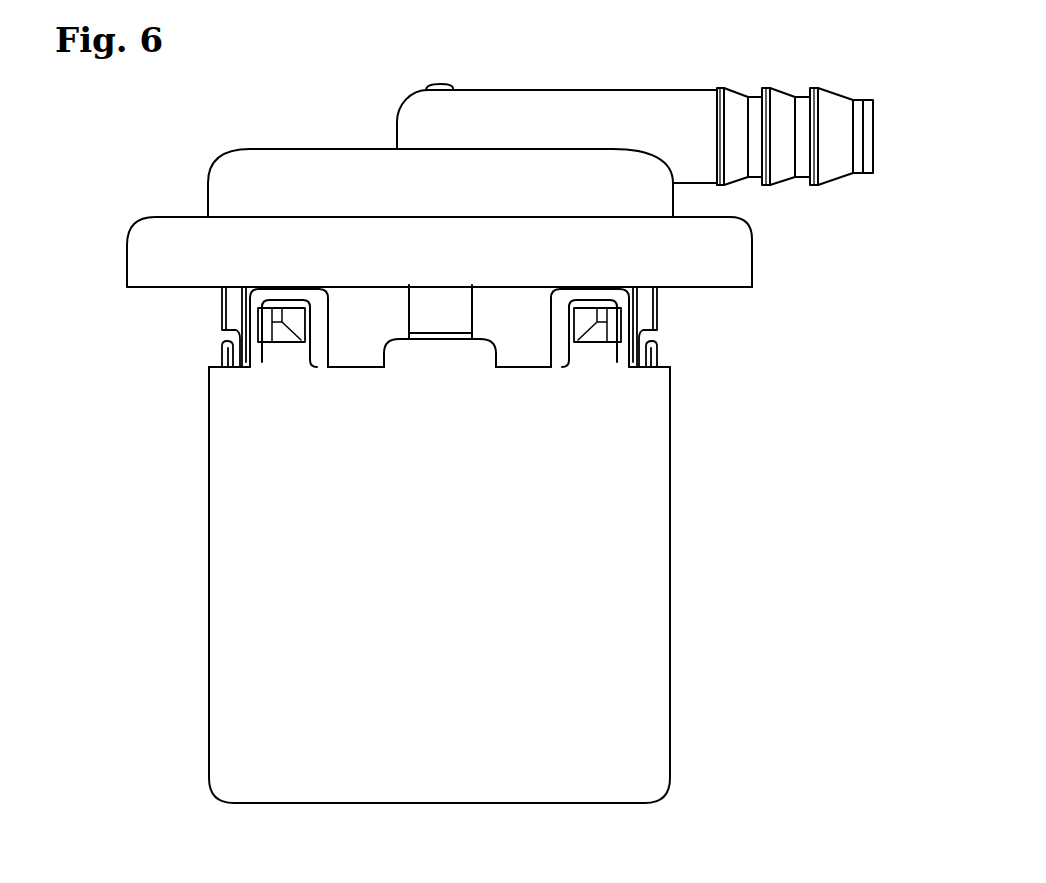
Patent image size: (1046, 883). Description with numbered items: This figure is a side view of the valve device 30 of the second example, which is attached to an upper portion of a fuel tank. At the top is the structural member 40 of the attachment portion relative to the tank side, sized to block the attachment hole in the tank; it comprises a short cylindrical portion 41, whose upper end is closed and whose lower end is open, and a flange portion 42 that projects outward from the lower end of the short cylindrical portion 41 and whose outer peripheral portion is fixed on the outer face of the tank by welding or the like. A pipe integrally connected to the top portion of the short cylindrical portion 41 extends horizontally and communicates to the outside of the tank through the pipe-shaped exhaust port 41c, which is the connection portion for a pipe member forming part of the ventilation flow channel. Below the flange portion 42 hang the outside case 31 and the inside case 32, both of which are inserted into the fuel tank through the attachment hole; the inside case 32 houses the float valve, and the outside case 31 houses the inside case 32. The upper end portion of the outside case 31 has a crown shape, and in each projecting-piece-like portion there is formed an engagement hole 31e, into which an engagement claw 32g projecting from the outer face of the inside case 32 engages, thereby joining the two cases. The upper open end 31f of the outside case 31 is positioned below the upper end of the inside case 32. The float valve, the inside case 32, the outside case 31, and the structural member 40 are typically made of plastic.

The fuel filter unit 30 is at (503, 585).
The outside case 31 is at (635, 657).
The engagement hole 31e is at (262, 318).
The upper open end 31f is at (366, 357).
The inside case 32 is at (515, 333).
The engagement claw 32g is at (282, 312).
The structural member 40 is at (745, 238).
The short cylindrical portion 41 is at (353, 168).
The exhaust port 41c is at (780, 102).
The flange portion 42 is at (748, 271).